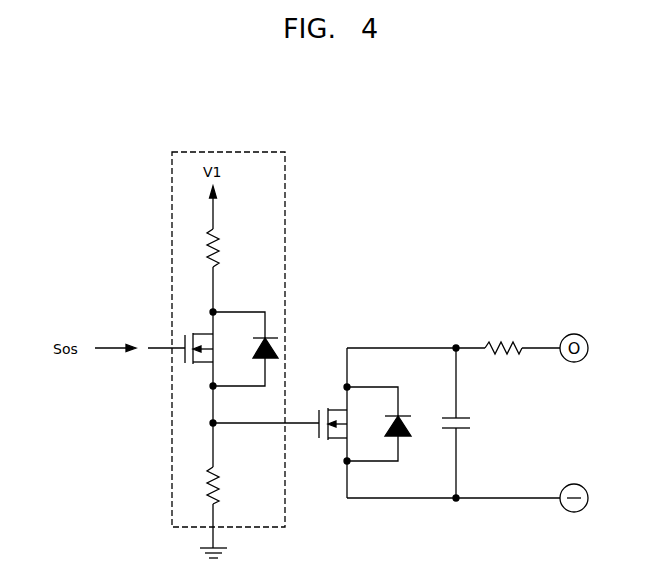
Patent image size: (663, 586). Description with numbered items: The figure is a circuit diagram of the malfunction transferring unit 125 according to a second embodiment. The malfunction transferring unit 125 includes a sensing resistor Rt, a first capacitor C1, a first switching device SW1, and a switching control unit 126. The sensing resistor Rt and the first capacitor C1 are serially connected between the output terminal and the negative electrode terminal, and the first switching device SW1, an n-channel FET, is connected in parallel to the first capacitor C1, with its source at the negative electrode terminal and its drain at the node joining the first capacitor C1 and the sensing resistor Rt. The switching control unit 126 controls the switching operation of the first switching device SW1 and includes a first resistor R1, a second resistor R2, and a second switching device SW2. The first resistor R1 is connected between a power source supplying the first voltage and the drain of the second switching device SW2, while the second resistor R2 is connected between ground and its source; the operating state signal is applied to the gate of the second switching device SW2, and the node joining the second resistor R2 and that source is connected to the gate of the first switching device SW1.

The malfunction transferring unit 125 is at (428, 224).
The switching control unit 126 is at (230, 152).
The first resistor R1 is at (226, 248).
The second resistor R2 is at (226, 485).
The first switching device SW1 is at (333, 452).
The second switching device SW2 is at (203, 373).
The sensing resistor Rt is at (522, 338).
The first capacitor C1 is at (470, 423).